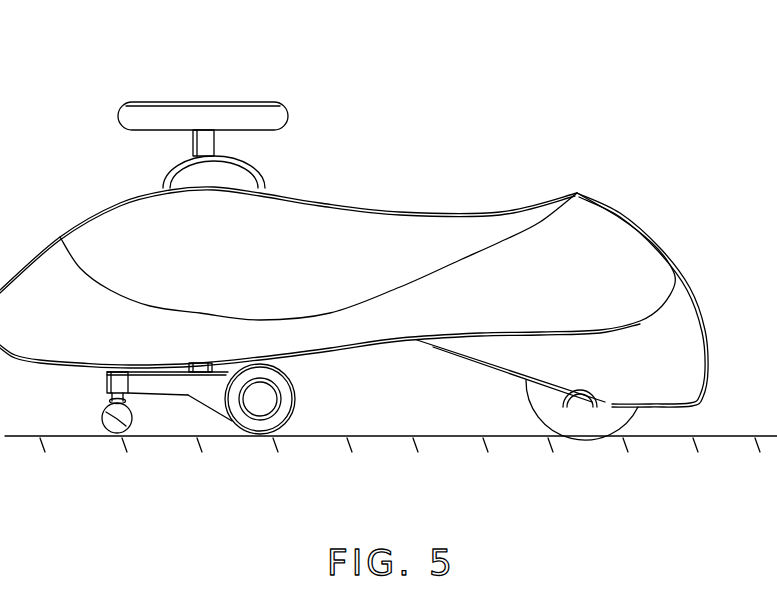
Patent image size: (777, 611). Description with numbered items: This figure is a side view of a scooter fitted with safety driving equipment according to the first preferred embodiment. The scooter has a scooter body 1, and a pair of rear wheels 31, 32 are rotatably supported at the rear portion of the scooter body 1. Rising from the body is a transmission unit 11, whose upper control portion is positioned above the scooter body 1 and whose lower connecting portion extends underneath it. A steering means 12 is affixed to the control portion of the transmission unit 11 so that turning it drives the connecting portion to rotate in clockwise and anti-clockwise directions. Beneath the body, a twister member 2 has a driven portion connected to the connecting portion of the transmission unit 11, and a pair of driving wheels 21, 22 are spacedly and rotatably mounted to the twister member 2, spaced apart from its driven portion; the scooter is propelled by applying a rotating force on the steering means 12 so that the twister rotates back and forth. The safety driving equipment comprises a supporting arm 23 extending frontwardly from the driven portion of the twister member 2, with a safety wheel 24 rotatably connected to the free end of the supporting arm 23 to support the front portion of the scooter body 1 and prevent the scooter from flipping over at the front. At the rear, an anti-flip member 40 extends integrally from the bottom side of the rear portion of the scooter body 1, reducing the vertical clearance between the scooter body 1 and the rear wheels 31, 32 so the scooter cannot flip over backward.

The scooter body 1 is at (385, 228).
The twister member 2 is at (214, 398).
The transmission unit 11 is at (200, 150).
The steering means 12 is at (257, 108).
The driving wheel 21 is at (308, 424).
The driving wheel 22 is at (290, 403).
The supporting arm 23 is at (162, 394).
The safety wheel 24 is at (105, 408).
The rear wheel 31 is at (607, 434).
The rear wheel 32 is at (607, 418).
The anti-flip member 40 is at (693, 335).